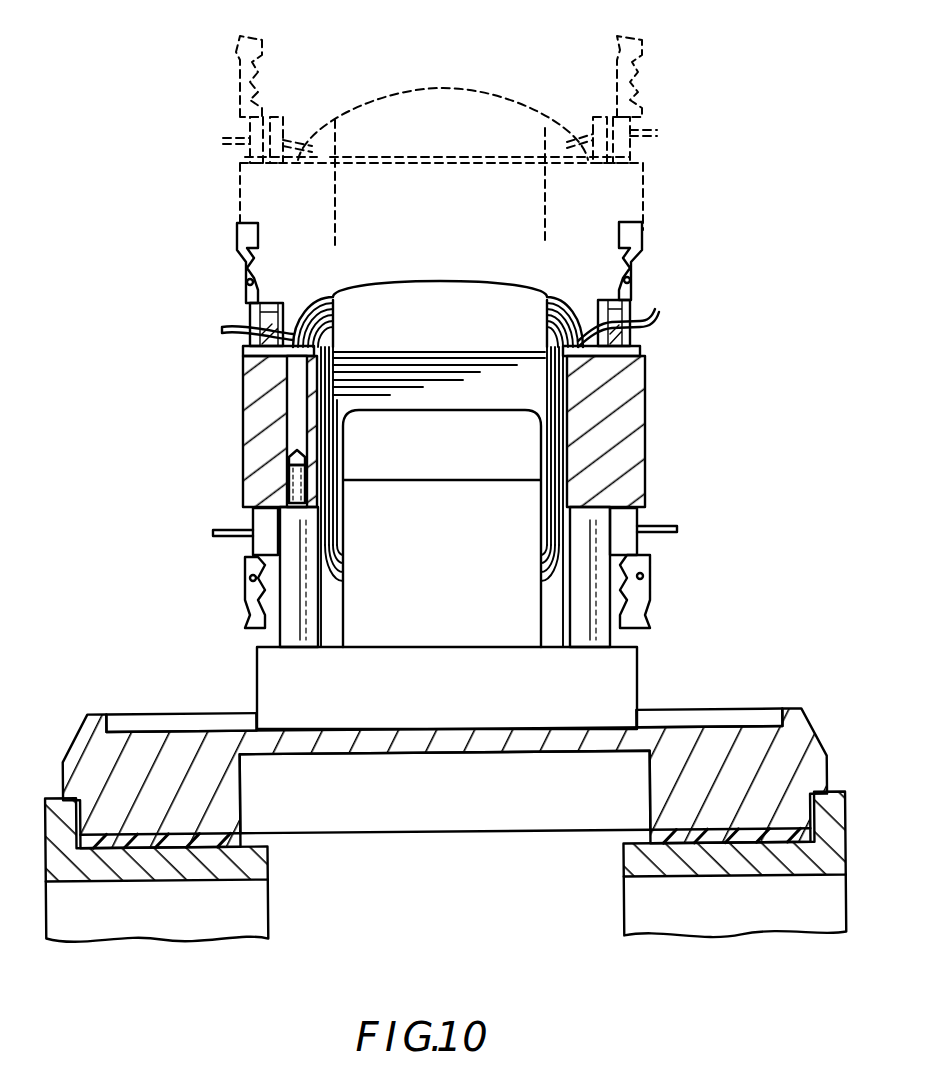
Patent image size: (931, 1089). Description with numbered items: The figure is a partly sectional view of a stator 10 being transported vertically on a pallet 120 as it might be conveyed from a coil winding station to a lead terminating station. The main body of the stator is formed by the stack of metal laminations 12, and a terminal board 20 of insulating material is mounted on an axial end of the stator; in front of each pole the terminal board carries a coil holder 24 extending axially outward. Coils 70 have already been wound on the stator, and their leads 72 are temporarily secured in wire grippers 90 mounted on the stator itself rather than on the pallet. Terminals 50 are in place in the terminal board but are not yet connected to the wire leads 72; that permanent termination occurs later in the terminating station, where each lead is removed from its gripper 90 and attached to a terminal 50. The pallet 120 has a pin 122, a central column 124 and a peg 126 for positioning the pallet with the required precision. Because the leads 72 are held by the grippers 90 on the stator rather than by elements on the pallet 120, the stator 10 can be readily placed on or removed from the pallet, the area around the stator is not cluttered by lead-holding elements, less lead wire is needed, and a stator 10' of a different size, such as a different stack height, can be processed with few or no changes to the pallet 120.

The stator 10 is at (445, 570).
The stator of a different size 10' is at (479, 140).
The stack of metal laminations 12 is at (250, 405).
The terminal board 20 is at (645, 507).
The coil holder 24 is at (445, 292).
The terminal 50 is at (240, 612).
The coil 70 is at (546, 312).
The lead 72 is at (213, 535).
The wire gripper 90 is at (246, 548).
The pallet 120 is at (808, 728).
The pin 122 is at (276, 636).
The central column 124 is at (492, 591).
The peg 126 is at (610, 634).